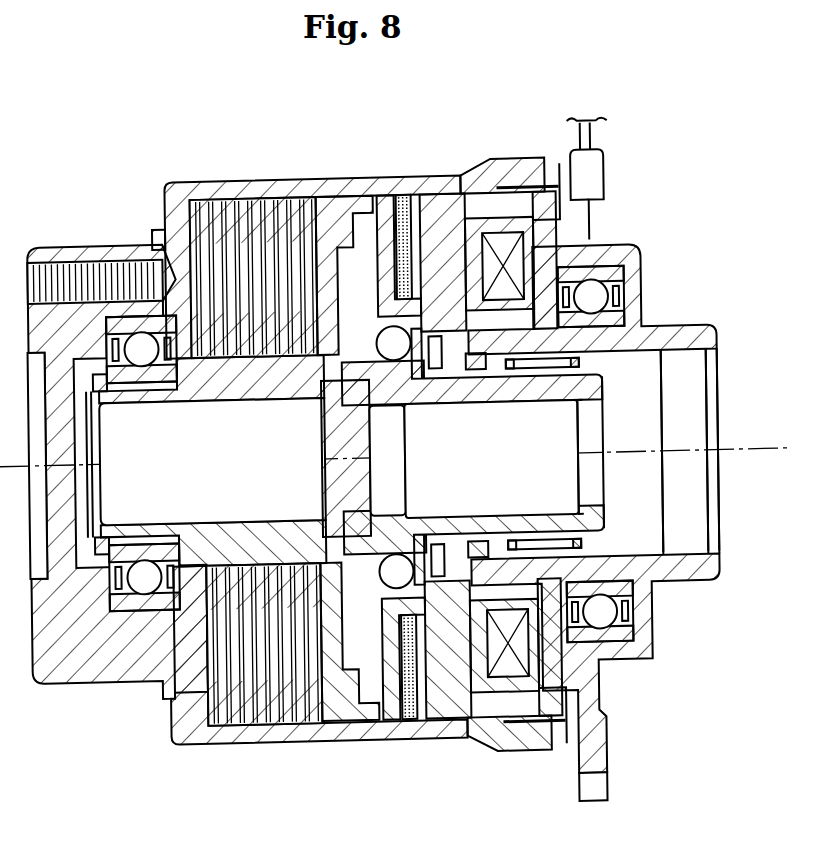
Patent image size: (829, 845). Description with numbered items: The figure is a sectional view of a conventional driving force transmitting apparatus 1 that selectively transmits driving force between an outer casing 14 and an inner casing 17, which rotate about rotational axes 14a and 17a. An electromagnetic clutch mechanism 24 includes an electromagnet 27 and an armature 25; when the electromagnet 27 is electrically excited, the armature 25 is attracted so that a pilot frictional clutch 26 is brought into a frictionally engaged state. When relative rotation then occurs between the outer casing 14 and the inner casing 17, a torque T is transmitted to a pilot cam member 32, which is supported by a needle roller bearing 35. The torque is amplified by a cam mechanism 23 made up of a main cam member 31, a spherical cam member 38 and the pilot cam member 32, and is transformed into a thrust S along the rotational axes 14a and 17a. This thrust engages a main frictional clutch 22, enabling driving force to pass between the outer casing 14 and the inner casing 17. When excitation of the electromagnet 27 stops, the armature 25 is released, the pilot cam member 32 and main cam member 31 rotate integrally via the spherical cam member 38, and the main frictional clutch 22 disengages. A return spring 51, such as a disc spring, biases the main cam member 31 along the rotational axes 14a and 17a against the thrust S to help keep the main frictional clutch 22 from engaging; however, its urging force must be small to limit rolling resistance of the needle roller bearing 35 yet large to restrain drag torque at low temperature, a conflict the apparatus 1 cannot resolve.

The driving force transmitting apparatus 1 is at (72, 699).
The outer casing 14 is at (81, 233).
The rotational axis 14a is at (174, 460).
The inner casing 17 is at (619, 381).
The rotational axis 17a is at (457, 458).
The main frictional clutch 22 is at (262, 186).
The cam mechanism 23 is at (333, 209).
The electromagnetic clutch mechanism 24 is at (537, 114).
The armature 25 is at (388, 189).
The pilot frictional clutch 26 is at (411, 187).
The electromagnet 27 is at (500, 245).
The main cam member 31 is at (389, 404).
The pilot cam member 32 is at (460, 402).
The needle roller bearing 35 is at (447, 352).
The spherical cam member 38 is at (423, 404).
The return spring 51 is at (347, 361).